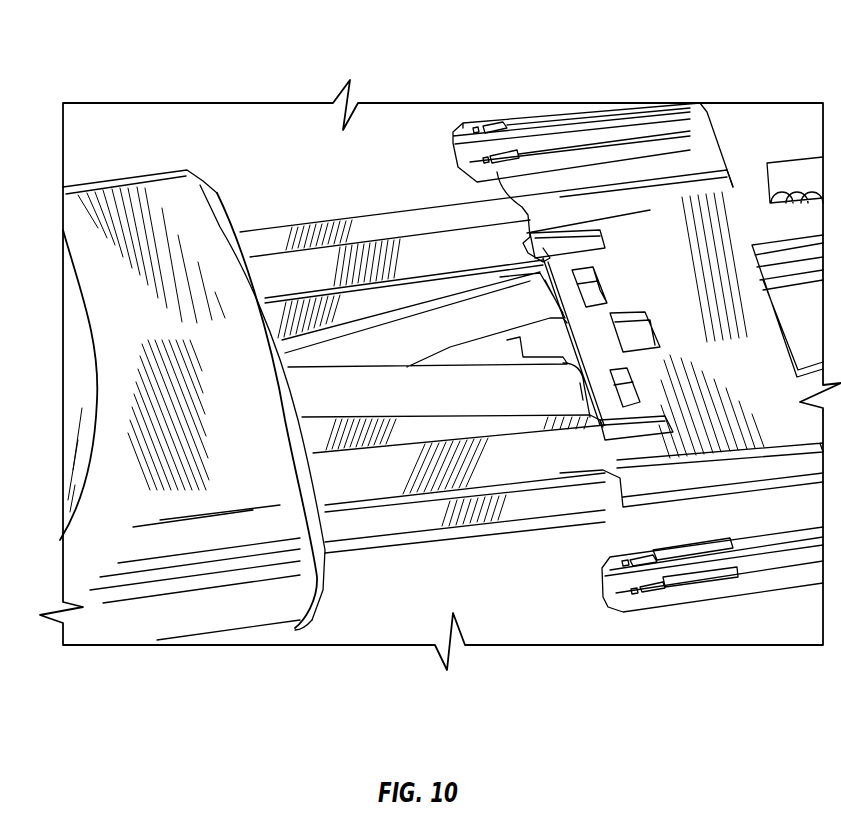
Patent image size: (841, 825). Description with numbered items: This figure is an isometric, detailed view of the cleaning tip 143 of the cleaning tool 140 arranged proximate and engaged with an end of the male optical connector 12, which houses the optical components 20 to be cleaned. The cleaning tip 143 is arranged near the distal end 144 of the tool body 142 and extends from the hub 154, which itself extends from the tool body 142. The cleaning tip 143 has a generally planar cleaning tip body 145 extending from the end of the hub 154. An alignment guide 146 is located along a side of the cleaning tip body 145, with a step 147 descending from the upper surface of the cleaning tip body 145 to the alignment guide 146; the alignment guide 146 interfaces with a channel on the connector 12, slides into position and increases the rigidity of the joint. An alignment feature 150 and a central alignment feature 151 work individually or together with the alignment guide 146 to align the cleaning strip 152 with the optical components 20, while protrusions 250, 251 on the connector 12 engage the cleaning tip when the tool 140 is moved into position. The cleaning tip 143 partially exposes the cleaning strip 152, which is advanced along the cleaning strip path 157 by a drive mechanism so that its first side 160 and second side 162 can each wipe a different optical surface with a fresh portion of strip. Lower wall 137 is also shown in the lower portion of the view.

The male connector 12 is at (763, 100).
The optical components 20 is at (713, 166).
The lower wall 137 is at (320, 540).
The cleaning tool 140 is at (110, 338).
The tool body 142 is at (58, 537).
The cleaning tip 143 is at (312, 142).
The distal end 144 is at (108, 136).
The cleaning tip body 145 is at (360, 528).
The alignment guide 146 is at (440, 215).
The step 147 is at (482, 487).
The alignment feature 150 is at (570, 243).
The central alignment feature 151 is at (497, 300).
The cleaning strip 152 is at (420, 323).
The hub 154 is at (150, 622).
The cleaning strip path 157 is at (355, 342).
The first side 160 is at (447, 390).
The second side 162 is at (335, 343).
The protrusion 250 is at (653, 250).
The protrusion 251 is at (551, 352).